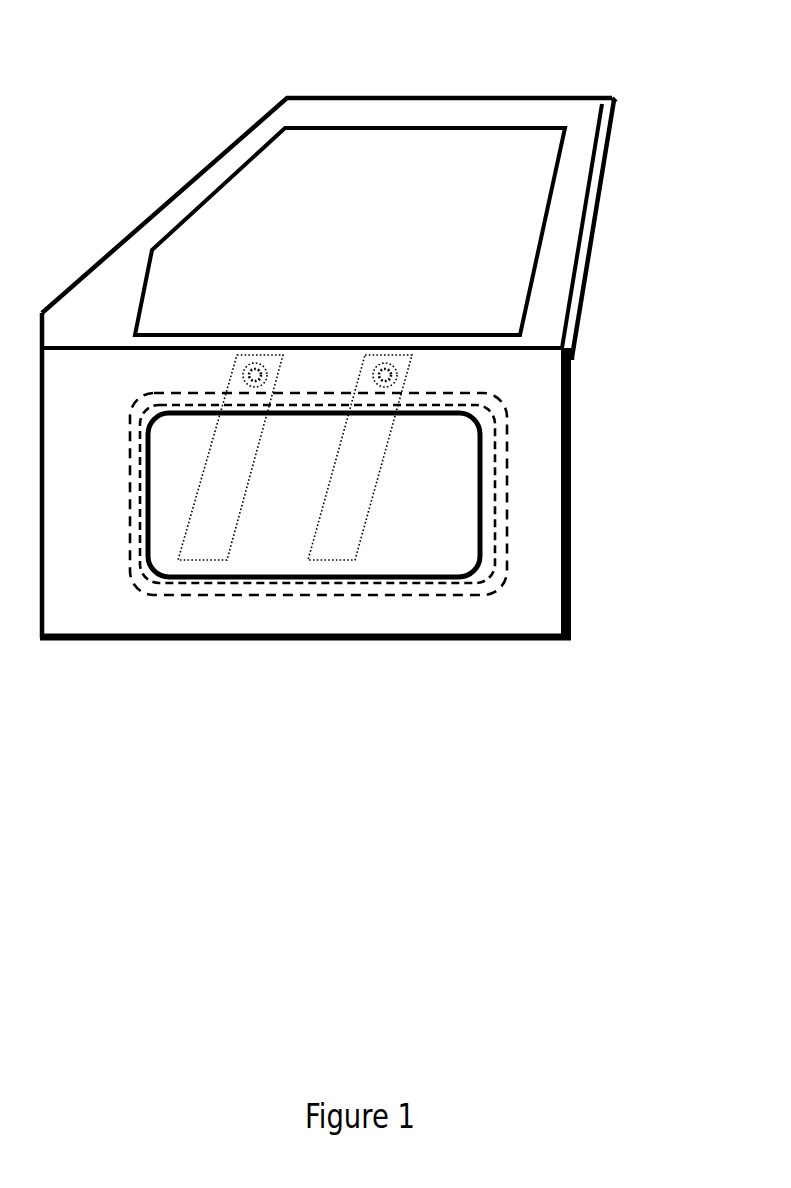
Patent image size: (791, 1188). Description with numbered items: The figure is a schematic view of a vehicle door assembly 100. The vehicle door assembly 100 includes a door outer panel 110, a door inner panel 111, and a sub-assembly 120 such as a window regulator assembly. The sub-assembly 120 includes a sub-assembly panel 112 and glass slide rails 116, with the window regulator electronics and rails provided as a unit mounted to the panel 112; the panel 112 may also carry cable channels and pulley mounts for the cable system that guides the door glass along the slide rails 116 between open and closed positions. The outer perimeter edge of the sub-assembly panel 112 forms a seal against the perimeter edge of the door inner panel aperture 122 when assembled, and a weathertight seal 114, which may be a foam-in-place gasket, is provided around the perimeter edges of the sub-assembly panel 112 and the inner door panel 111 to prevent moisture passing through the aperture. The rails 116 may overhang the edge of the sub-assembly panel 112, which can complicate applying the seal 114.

The vehicle door assembly 100 is at (628, 86).
The door outer panel 110 is at (604, 183).
The door inner panel 111 is at (507, 603).
The sub-assembly panel 112 is at (493, 408).
The weathertight seal 114 is at (170, 409).
The glass slide rails 116 is at (266, 358).
The sub-assembly 120 is at (515, 465).
The door inner panel aperture 122 is at (480, 533).